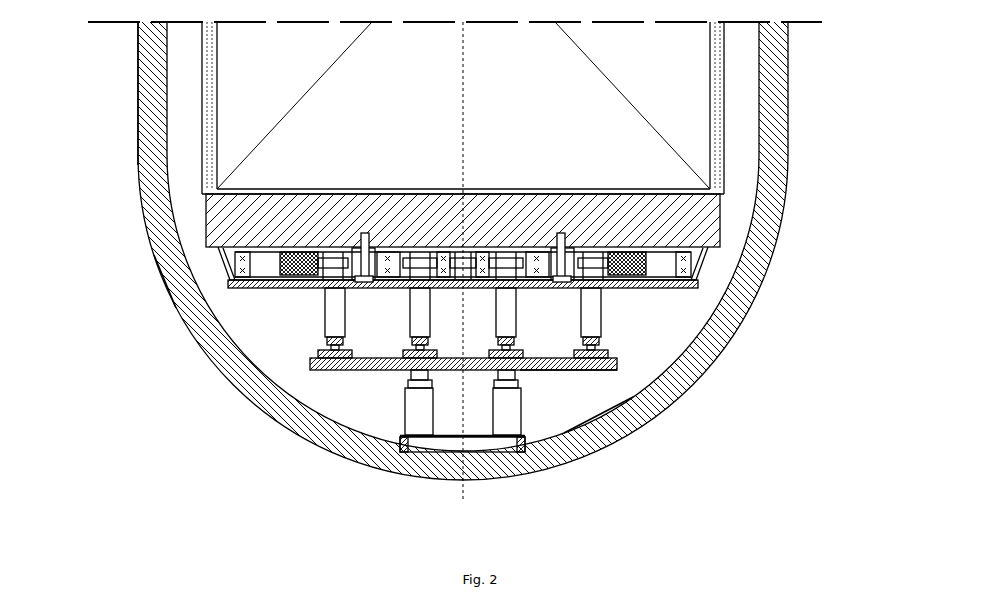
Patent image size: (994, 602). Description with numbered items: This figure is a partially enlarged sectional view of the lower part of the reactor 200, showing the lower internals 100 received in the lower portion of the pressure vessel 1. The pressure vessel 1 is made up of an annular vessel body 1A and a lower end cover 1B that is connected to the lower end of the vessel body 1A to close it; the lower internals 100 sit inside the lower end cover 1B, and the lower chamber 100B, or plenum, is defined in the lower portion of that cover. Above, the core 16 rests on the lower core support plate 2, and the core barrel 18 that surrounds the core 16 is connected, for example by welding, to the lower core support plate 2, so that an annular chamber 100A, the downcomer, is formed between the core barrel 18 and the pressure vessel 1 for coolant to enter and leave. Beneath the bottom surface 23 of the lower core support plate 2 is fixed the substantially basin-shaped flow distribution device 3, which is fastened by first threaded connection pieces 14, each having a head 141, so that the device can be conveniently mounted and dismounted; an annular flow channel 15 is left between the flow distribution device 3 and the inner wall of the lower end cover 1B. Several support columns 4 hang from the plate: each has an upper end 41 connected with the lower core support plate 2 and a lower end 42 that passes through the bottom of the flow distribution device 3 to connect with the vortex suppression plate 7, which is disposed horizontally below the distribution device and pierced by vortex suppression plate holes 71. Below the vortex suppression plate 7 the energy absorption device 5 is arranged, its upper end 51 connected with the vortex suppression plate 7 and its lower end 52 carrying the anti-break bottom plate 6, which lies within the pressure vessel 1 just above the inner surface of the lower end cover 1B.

The reactor 200 is at (103, 172).
The pressure vessel 1 is at (785, 177).
The vessel body 1A is at (138, 160).
The lower end cover 1B is at (163, 282).
The annular chamber (downcomer) 100A is at (742, 148).
The core barrel 18 is at (715, 123).
The core 16 is at (583, 143).
The lower core support plate 2 is at (222, 257).
The lower internals 100 is at (280, 282).
The annular flow channel 15 is at (230, 281).
The flow distribution device 3 is at (222, 270).
The bottom surface of lower core support plate 23 is at (677, 250).
The upper end of support column 41 is at (660, 290).
The first threaded connection piece 14 is at (603, 290).
The head of first threaded connection piece 141 is at (602, 300).
The support column 4 is at (327, 333).
The lower end of support column 42 is at (610, 370).
The vortex suppression plate 7 is at (313, 360).
The vortex suppression plate hole 71 is at (557, 371).
The anti-break bottom plate 6 is at (422, 412).
The upper end of energy absorption device 51 is at (490, 390).
The lower end of energy absorption device 52 is at (507, 425).
The energy absorption device 5 is at (397, 442).
The lower chamber (plenum) 100B is at (567, 403).